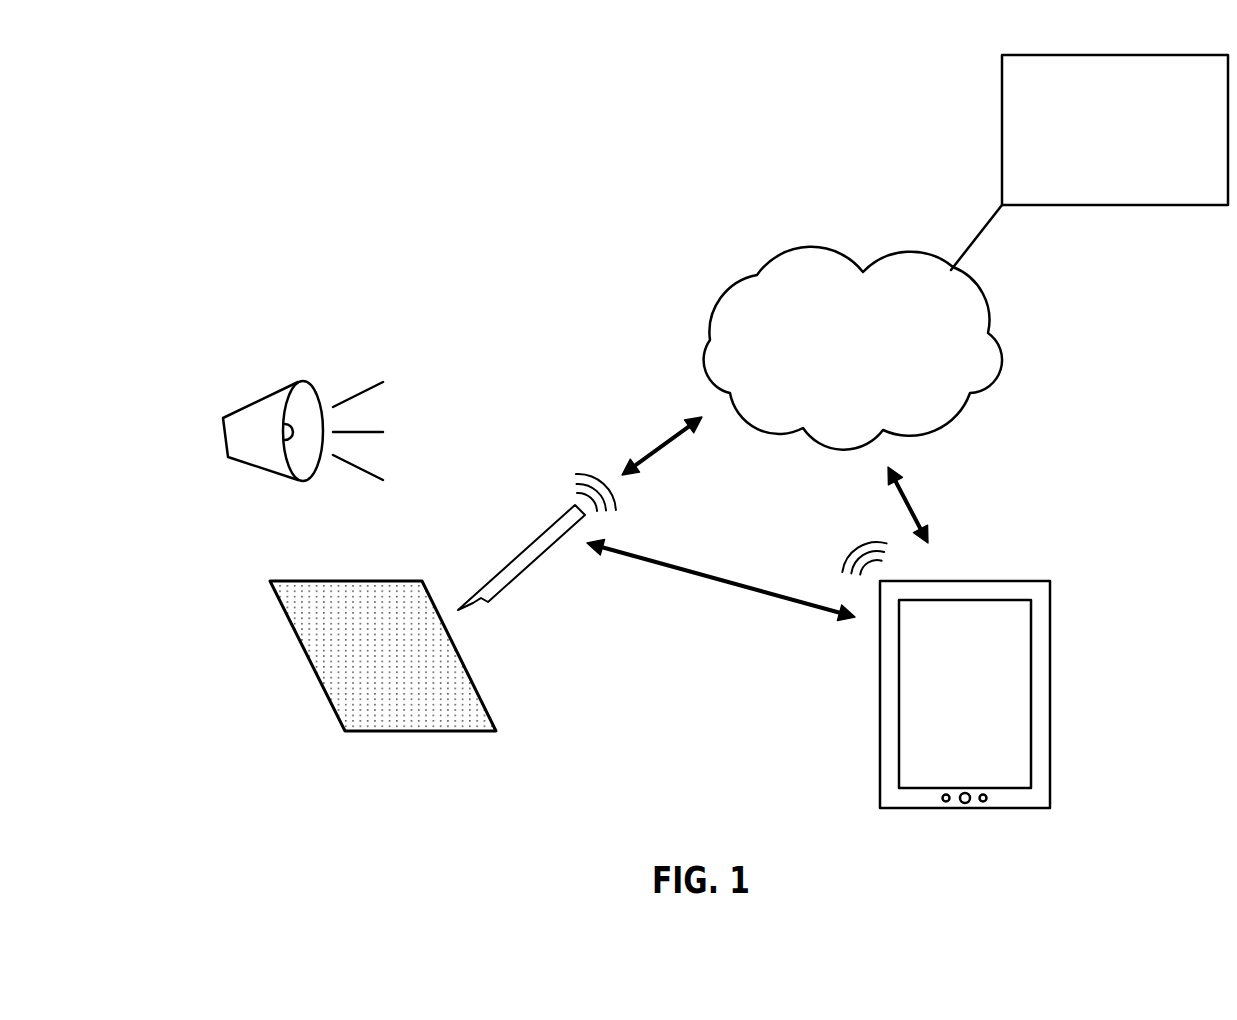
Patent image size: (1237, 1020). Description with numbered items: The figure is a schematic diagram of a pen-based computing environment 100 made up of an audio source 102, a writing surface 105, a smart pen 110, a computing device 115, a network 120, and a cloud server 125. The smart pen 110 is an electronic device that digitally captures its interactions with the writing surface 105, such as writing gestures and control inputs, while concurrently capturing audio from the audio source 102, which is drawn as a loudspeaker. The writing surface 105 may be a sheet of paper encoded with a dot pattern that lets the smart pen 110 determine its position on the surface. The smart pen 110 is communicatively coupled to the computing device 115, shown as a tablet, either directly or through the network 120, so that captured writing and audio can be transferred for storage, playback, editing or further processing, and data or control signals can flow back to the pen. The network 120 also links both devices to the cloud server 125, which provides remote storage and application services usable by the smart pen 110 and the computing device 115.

The pen-based computing environment 100 is at (279, 243).
The audio source 102 is at (262, 398).
The writing surface 105 is at (332, 657).
The smart pen 110 is at (533, 533).
The computing device 115 is at (1020, 580).
The network 120 is at (832, 376).
The cloud server 125 is at (1095, 158).